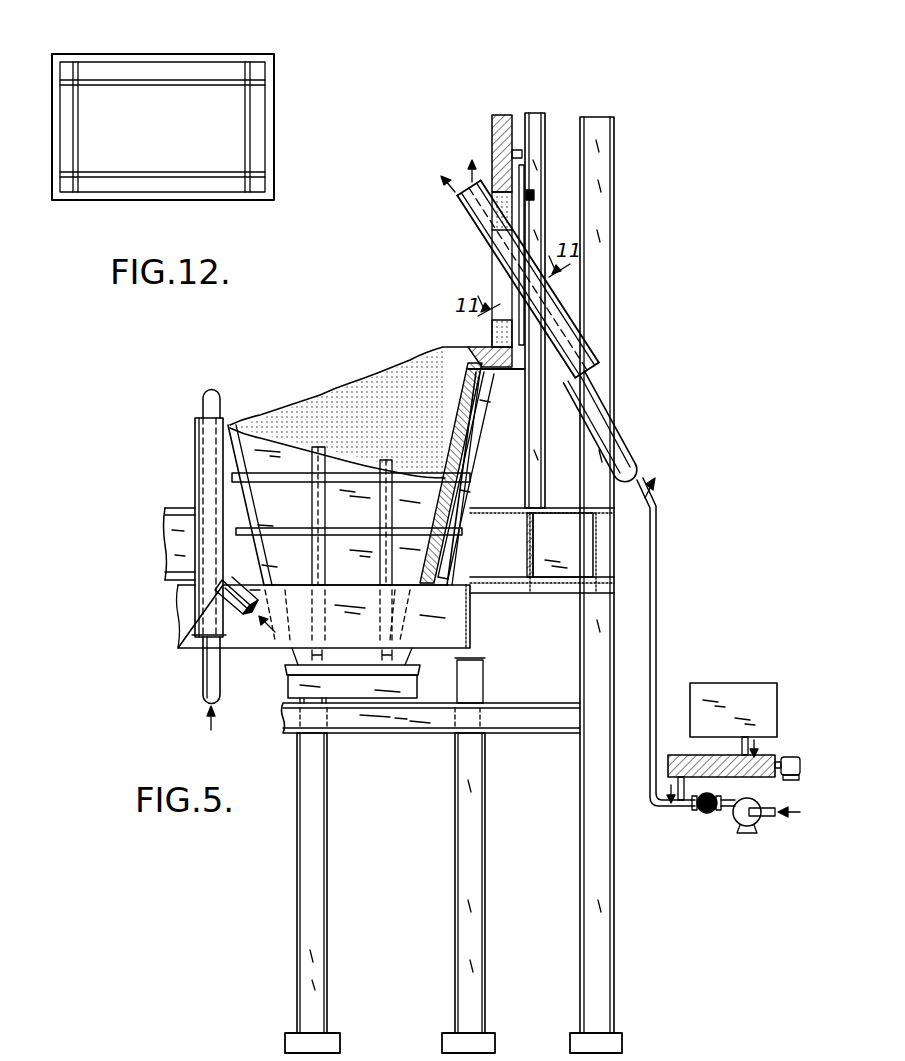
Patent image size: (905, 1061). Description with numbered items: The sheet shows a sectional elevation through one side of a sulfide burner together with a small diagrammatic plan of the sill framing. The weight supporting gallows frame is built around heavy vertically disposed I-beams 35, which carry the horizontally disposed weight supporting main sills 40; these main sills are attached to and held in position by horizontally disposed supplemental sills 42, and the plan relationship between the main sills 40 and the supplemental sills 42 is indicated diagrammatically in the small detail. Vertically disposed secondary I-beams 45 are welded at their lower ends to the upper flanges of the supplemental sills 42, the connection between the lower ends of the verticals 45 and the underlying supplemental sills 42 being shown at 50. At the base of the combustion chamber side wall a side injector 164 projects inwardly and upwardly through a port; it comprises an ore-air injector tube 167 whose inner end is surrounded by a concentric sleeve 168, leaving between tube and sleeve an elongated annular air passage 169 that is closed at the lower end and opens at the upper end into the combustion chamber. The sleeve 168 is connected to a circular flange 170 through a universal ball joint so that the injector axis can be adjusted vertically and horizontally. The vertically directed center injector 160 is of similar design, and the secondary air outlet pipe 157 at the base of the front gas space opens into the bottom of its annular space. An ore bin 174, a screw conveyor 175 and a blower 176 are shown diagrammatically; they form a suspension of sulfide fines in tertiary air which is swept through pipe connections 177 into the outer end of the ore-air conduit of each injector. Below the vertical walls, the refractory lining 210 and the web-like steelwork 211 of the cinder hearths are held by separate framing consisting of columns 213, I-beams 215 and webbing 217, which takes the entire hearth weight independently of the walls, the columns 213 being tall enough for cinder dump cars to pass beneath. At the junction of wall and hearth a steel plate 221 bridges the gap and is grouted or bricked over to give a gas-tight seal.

In FIG. 5, the vertically disposed I-beam 35 is at (606, 206).
In FIG. 12, the main sill 40 is at (190, 55).
In FIG. 5, the main sill 40 is at (596, 547).
In FIG. 12, the supplemental sill 42 is at (245, 108).
In FIG. 5, the supplemental sill 42 is at (166, 547).
In FIG. 5, the secondary I-beam 45 is at (537, 118).
In FIG. 5, the connection of verticals to supplemental sills 50 is at (541, 511).
In FIG. 5, the secondary air outlet pipe 157 is at (248, 616).
In FIG. 5, the center injector 160 is at (200, 460).
In FIG. 5, the side injector 164 is at (584, 320).
In FIG. 5, the ore-air injector tube 167 is at (612, 444).
In FIG. 5, the concentric sleeve 168 is at (555, 303).
In FIG. 5, the annular air passage 169 is at (585, 348).
In FIG. 5, the circular flange 170 is at (534, 195).
In FIG. 5, the ore bin 174 is at (733, 690).
In FIG. 5, the screw conveyor 175 is at (683, 755).
In FIG. 5, the blower 176 is at (740, 823).
In FIG. 5, the pipe connection 177 is at (650, 576).
In FIG. 5, the refractory lining 210 is at (448, 420).
In FIG. 5, the web-like steelwork 211 is at (318, 450).
In FIG. 5, the column 213 is at (320, 875).
In FIG. 5, the I-beam of hearth framing 215 is at (456, 634).
In FIG. 5, the webbing 217 is at (234, 507).
In FIG. 5, the steel plate 221 is at (489, 372).